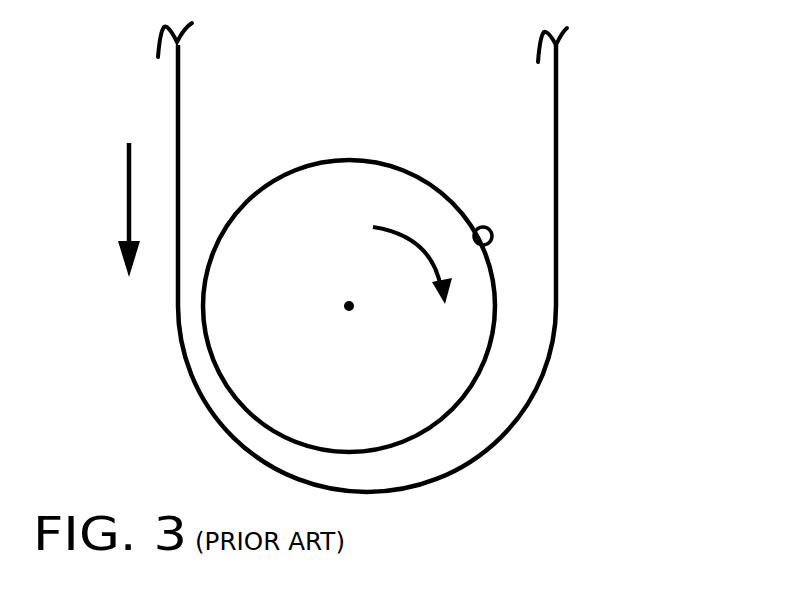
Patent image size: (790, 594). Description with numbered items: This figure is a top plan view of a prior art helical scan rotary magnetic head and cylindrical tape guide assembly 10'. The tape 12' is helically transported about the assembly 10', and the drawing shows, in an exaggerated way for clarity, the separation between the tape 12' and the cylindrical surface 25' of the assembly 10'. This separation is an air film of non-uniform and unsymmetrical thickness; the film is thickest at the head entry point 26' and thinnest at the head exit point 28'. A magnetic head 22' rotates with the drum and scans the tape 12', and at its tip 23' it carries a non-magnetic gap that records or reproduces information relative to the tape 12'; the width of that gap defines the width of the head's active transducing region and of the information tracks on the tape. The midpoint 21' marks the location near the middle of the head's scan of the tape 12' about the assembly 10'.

The cylindrical drum tape guide assembly 10' is at (349, 246).
The tape 12' is at (619, 167).
The midpoint 21' is at (367, 431).
The magnetic head 22' is at (472, 184).
The tip 23' is at (515, 193).
The cylindrical surface 25' is at (573, 309).
The head entry point 26' is at (579, 346).
The head exit point 28' is at (117, 192).